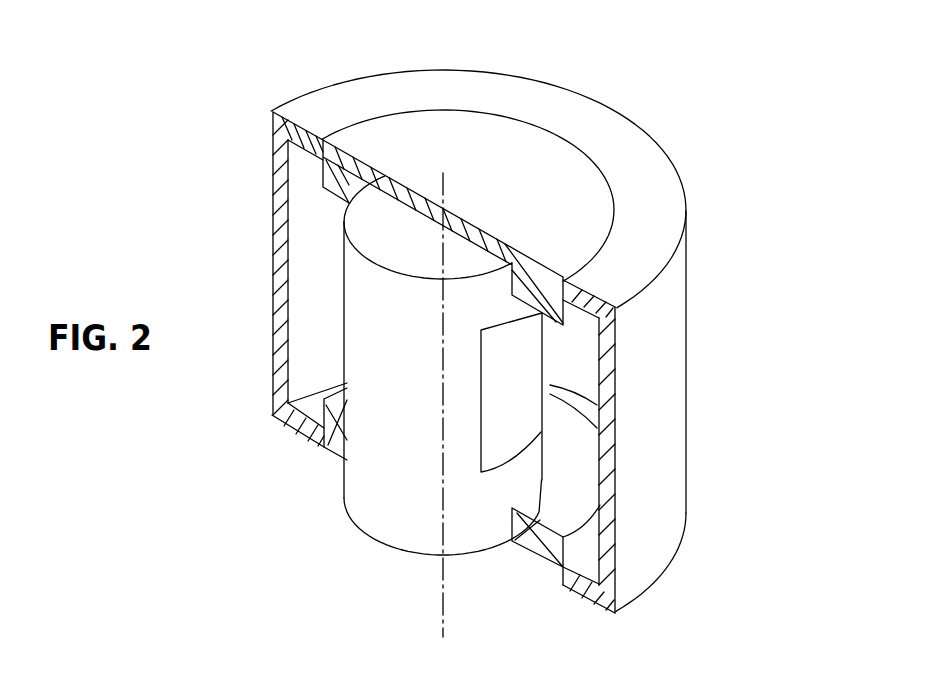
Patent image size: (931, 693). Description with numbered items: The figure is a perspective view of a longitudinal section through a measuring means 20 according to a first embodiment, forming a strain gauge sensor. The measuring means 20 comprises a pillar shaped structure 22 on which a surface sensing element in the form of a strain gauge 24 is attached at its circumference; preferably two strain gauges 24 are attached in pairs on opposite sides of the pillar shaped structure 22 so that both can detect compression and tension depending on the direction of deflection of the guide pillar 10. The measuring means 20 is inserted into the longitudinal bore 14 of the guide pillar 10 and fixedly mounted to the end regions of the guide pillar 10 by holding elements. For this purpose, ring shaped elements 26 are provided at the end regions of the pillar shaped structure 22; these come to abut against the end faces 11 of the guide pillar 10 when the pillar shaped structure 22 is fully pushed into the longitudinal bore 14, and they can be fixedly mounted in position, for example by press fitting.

The guide pillar 10 is at (678, 175).
The end faces 11 is at (375, 84).
The longitudinal bore 14 is at (305, 358).
The measuring means 20 is at (636, 97).
The pillar shaped structure 22 is at (346, 564).
The strain gauge 24 is at (498, 435).
The ring shaped elements 26 is at (367, 147).